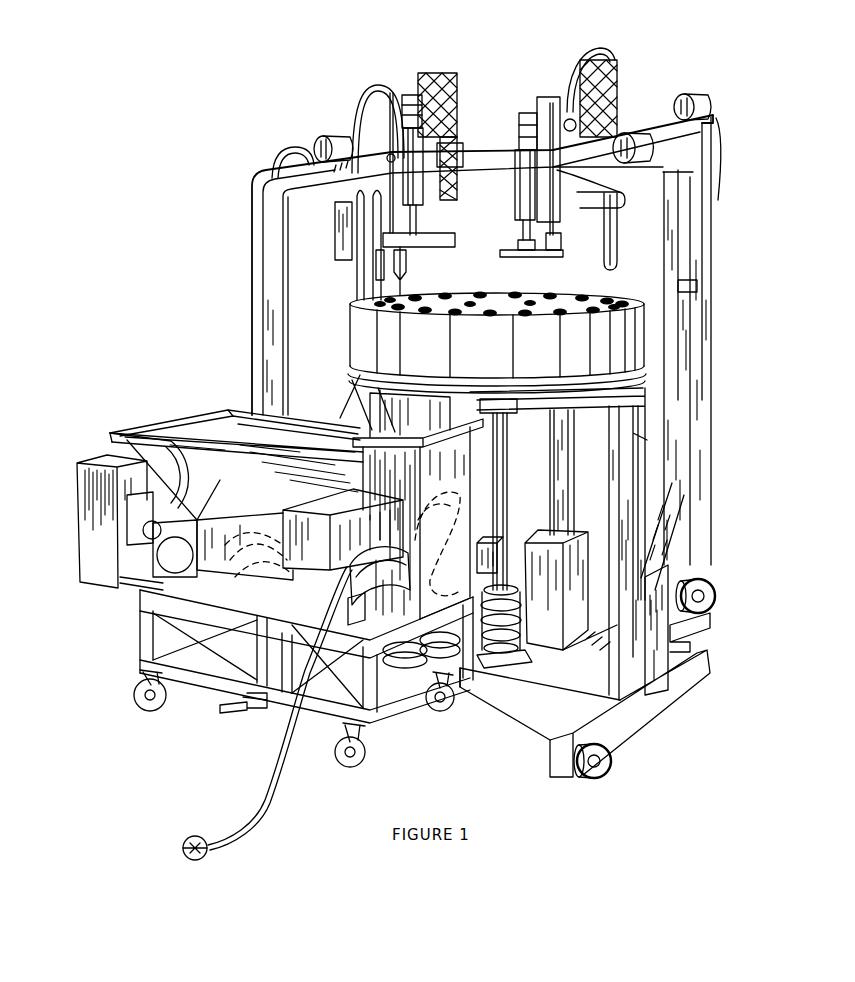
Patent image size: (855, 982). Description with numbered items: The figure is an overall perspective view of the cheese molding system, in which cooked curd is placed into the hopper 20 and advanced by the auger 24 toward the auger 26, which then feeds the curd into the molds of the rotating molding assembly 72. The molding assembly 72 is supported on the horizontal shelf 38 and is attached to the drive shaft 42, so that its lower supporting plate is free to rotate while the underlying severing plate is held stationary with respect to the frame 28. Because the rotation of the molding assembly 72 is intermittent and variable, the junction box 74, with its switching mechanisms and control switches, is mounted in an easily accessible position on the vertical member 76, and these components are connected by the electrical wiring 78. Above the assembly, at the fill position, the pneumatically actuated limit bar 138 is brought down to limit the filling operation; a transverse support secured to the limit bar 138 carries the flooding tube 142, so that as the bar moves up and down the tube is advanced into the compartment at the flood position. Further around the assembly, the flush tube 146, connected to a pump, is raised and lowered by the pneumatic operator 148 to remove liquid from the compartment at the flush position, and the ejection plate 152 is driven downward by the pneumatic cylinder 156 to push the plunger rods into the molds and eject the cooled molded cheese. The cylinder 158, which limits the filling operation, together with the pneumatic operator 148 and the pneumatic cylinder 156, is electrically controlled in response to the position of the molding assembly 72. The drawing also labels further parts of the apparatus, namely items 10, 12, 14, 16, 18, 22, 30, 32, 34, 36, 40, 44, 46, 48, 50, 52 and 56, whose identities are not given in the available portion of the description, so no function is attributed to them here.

The apparatus 10 is at (212, 283).
The feed assembly 12 is at (103, 430).
The frame 14 is at (708, 407).
The cart 16 is at (143, 633).
The casters 18 is at (135, 705).
The hopper 20 is at (192, 430).
The cabinet 22 is at (471, 477).
The auger 24 is at (283, 583).
The auger 26 is at (456, 470).
The frame 28 is at (690, 703).
The wheels 30 is at (710, 640).
The base beam 32 is at (620, 730).
The cross beam 34 is at (540, 700).
The bracket 36 is at (630, 671).
The horizontal shelf 38 is at (598, 400).
The base plate 40 is at (560, 670).
The drive shaft 42 is at (510, 482).
The housing 44 is at (522, 600).
The block 46 is at (519, 537).
The housing face 48 is at (558, 630).
The bushing 50 is at (503, 657).
The support plate 52 is at (517, 402).
The panel 56 is at (608, 469).
The molding assembly 72 is at (350, 343).
The junction box 74 is at (335, 237).
The vertical member 76 is at (352, 283).
The electrical wiring 78 is at (310, 143).
The limit bar 138 is at (450, 233).
The flooding tube 142 is at (420, 278).
The flush tube 146 is at (606, 238).
The pneumatic operator 148 is at (567, 120).
The ejection plate 152 is at (495, 268).
The pneumatic cylinder 156 is at (527, 148).
The cylinder 158 is at (407, 147).